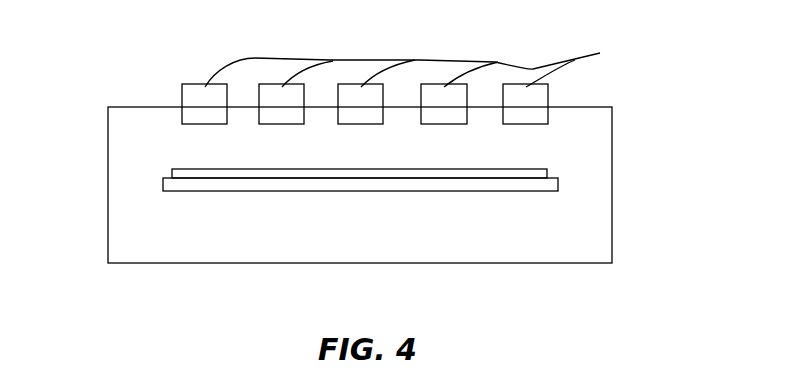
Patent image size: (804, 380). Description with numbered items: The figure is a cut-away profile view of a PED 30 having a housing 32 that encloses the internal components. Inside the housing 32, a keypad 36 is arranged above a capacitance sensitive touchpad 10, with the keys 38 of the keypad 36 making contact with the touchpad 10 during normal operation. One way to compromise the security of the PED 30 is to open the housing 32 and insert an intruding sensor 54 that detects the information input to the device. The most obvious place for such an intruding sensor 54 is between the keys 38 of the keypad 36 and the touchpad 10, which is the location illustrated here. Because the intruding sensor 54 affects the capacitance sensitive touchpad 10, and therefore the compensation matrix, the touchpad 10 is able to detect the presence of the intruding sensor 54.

The capacitance sensitive touchpad 10 is at (536, 187).
The PED 30 is at (426, 182).
The housing 32 is at (640, 150).
The keypad 36 is at (176, 85).
The keys 38 is at (415, 64).
The intruding sensor 54 is at (185, 167).